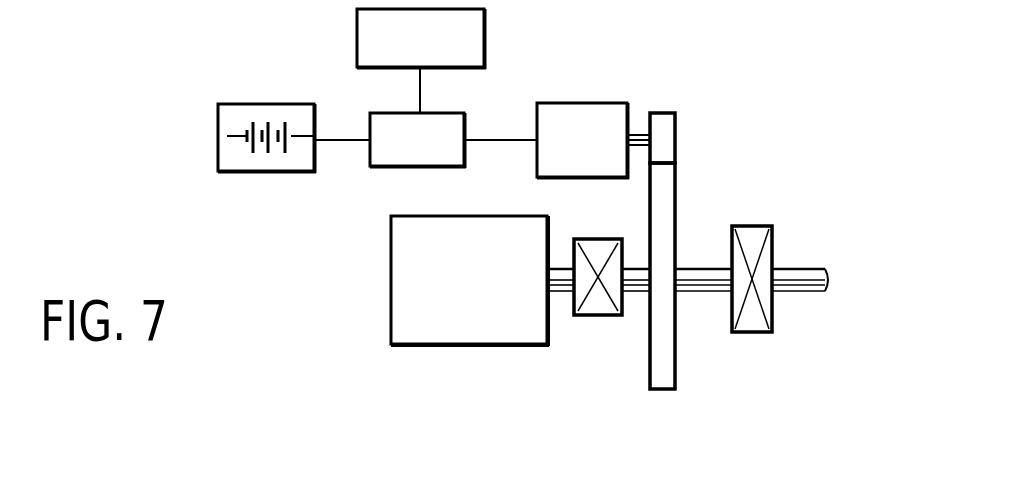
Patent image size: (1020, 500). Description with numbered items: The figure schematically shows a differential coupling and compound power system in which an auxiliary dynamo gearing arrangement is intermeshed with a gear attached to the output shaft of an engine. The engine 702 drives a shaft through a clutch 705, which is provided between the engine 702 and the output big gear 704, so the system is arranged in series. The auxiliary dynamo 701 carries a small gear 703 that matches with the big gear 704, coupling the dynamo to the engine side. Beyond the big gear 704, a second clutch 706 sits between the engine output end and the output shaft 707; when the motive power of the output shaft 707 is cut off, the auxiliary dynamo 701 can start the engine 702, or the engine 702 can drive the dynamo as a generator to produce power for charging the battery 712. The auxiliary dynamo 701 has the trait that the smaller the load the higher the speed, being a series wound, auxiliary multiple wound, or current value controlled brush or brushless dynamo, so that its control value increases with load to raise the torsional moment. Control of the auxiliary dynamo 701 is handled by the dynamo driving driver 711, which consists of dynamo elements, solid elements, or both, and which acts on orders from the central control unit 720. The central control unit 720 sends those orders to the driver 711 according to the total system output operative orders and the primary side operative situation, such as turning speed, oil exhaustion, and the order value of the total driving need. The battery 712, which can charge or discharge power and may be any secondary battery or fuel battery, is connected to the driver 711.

The CCU 720 is at (421, 39).
The driver 711 is at (418, 140).
The battery 712 is at (217, 142).
The auxiliary dynamo 701 is at (593, 141).
The engine 702 is at (397, 293).
The small gear 703 is at (670, 135).
The big gear 704 is at (663, 367).
The clutch 705 is at (593, 305).
The clutch 706 is at (763, 252).
The output shaft 707 is at (800, 285).